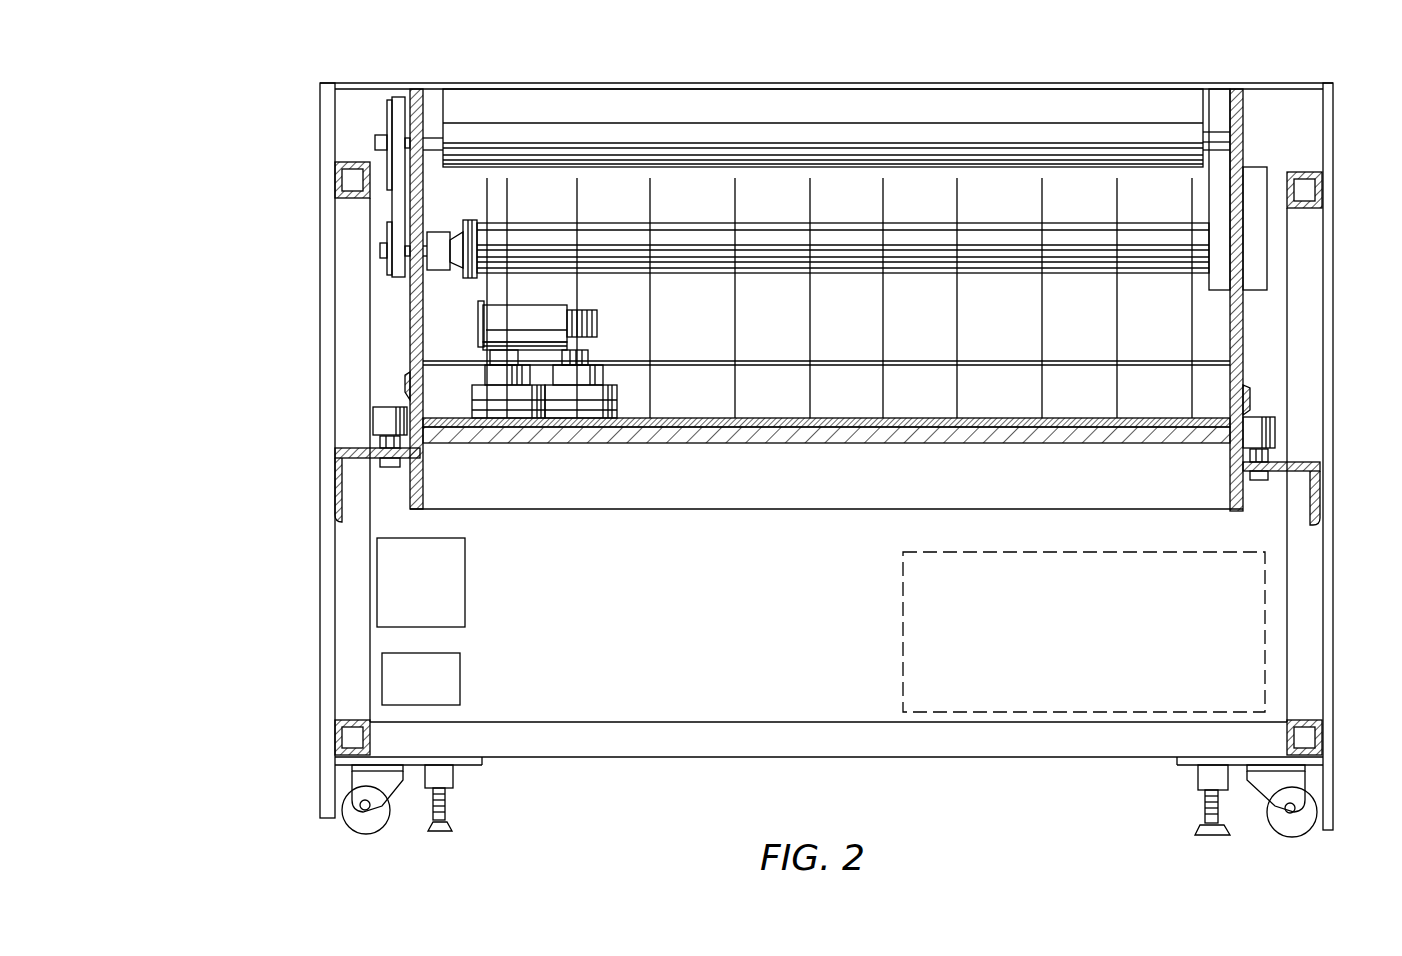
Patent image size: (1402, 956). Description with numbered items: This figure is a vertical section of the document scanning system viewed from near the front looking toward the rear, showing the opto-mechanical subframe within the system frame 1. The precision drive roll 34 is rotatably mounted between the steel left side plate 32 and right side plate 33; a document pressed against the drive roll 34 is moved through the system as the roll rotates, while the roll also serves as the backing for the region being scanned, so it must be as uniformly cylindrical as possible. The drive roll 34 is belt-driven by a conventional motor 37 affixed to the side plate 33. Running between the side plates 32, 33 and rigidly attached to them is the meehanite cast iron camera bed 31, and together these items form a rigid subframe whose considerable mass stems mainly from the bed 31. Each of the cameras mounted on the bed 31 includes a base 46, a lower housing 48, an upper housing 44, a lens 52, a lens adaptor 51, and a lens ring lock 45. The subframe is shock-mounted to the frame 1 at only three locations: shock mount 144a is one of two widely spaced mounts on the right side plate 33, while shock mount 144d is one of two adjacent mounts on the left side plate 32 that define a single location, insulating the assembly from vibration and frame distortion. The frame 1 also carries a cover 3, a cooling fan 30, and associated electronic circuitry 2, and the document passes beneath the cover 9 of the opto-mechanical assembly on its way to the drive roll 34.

The system frame 1 is at (1320, 206).
The electronic circuitry 2 is at (1088, 640).
The cover 3 is at (326, 644).
The cover 9 is at (800, 84).
The cooling fan 30 is at (852, 330).
The camera bed 31 is at (848, 486).
The left side plate 32 is at (773, 236).
The right side plate 33 is at (1243, 128).
The precision drive roll 34 is at (722, 126).
The motor 37 is at (497, 306).
The upper housing 44 is at (594, 374).
The lens ring lock 45 is at (590, 354).
The camera base 46 is at (615, 410).
The lower housing 48 is at (615, 392).
The lens adaptor 51 is at (587, 334).
The lens 52 is at (588, 312).
The shock mount 144a is at (1275, 437).
The shock mount 144d is at (375, 421).